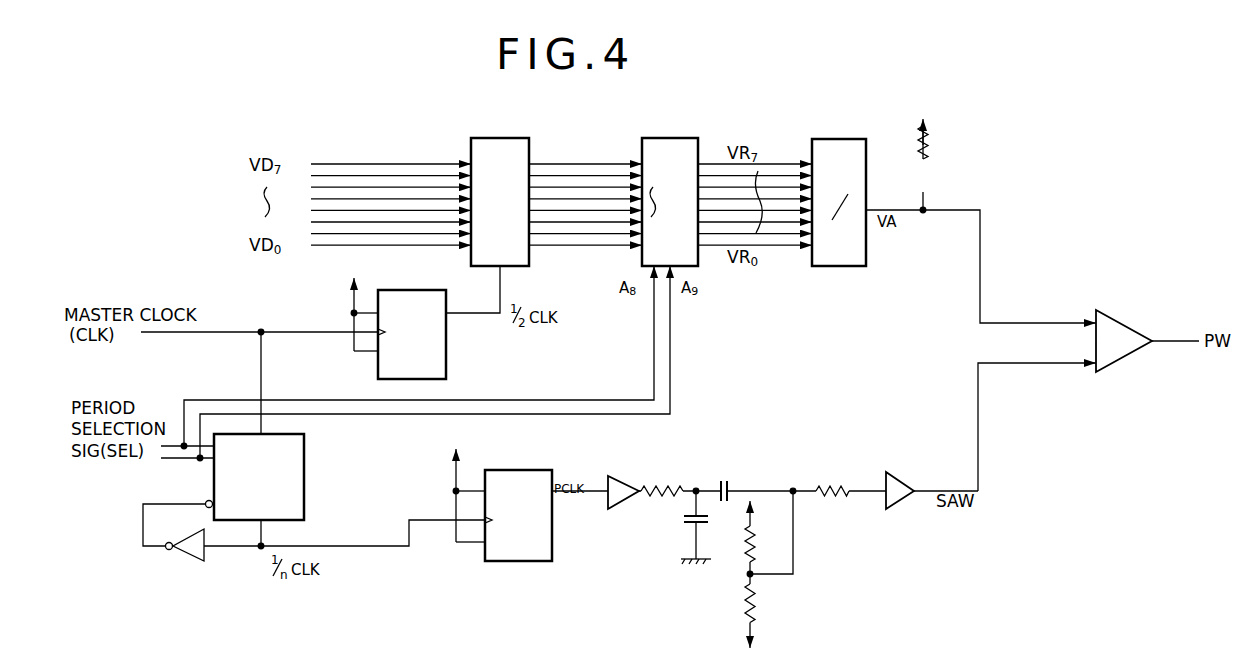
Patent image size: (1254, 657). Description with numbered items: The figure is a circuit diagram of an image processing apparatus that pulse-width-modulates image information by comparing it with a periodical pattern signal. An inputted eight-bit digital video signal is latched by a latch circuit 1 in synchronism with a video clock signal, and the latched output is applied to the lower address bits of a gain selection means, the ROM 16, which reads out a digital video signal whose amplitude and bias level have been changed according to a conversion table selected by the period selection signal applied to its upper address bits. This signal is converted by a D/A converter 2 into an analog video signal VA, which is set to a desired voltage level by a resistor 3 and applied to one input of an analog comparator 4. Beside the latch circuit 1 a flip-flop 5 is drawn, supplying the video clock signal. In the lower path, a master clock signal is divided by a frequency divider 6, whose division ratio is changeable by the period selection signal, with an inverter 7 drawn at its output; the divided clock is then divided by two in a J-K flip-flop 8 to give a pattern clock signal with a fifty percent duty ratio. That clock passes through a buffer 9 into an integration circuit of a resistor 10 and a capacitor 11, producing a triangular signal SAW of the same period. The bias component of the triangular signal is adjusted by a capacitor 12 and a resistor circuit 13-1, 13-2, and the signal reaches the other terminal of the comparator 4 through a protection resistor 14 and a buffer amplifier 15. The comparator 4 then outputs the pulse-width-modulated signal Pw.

The latch circuit 1 is at (522, 147).
The gain selection means (ROM) 16 is at (692, 143).
The D/A converter 2 is at (858, 143).
The resistor 3 is at (930, 181).
The analog comparator 4 is at (1132, 328).
The flip-flop 5 is at (445, 360).
The frequency divider 6 is at (303, 461).
The inverter 7 is at (190, 558).
The J-K flip-flop 8 is at (537, 560).
The buffer 9 is at (625, 478).
The resistor 10 is at (660, 497).
The capacitor 11 is at (685, 523).
The capacitor 12 is at (727, 481).
The resistor circuit 13-1 is at (740, 558).
The resistor circuit 13-2 is at (757, 602).
The protection resistor 14 is at (832, 482).
The buffer amplifier 15 is at (893, 503).